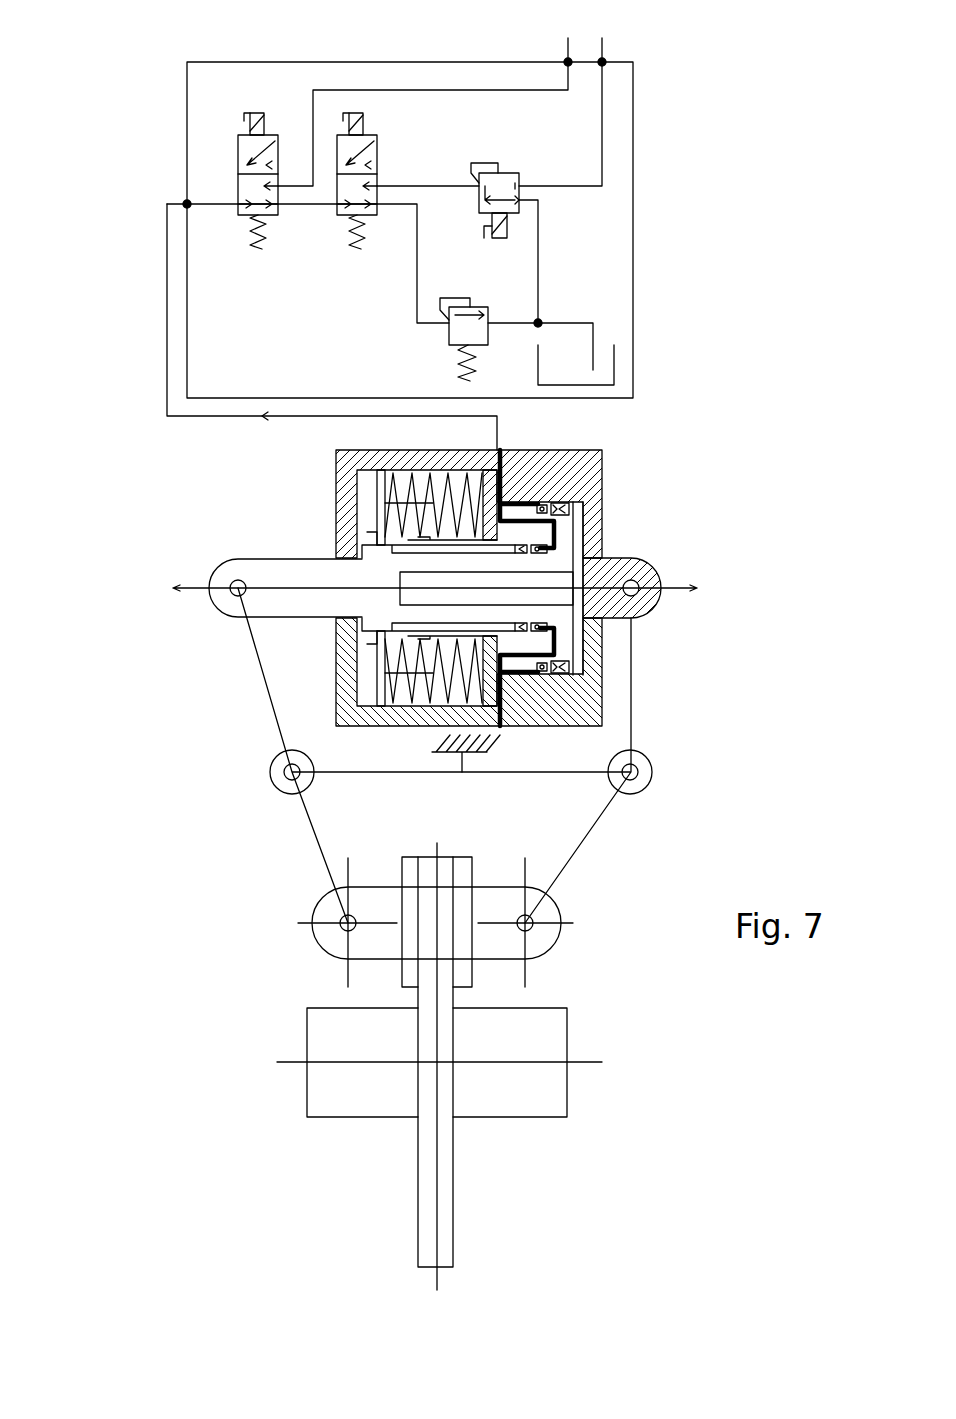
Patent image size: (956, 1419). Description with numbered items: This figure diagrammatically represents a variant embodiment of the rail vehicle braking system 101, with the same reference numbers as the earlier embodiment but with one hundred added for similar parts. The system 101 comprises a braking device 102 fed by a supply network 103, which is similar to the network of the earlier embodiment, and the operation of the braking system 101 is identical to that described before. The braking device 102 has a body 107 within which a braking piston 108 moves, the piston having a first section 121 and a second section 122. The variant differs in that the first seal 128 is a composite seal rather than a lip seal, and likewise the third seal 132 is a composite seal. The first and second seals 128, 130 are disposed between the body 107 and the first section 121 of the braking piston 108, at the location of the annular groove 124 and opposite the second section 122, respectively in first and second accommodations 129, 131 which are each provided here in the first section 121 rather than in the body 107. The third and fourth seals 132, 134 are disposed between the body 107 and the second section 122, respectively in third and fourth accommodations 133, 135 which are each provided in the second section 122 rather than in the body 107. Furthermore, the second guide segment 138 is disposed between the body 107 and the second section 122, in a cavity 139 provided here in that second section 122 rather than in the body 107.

The rail vehicle braking system 101 is at (125, 529).
The braking device 102 is at (672, 418).
The supply network 103 is at (187, 62).
The body 107 is at (598, 470).
The braking piston 108 is at (583, 640).
The first section 121 is at (390, 553).
The second section 122 is at (512, 680).
The annular groove 124 is at (558, 650).
The first seal 128 is at (548, 552).
The first accommodation 129 is at (578, 612).
The second seal 130 is at (500, 468).
The second accommodation 131 is at (520, 550).
The third seal 132 is at (540, 680).
The third accommodation 133 is at (560, 667).
The fourth seal 134 is at (556, 503).
The fourth accommodation 135 is at (568, 507).
The second guide segment 138 is at (555, 680).
The cavity 139 is at (510, 668).